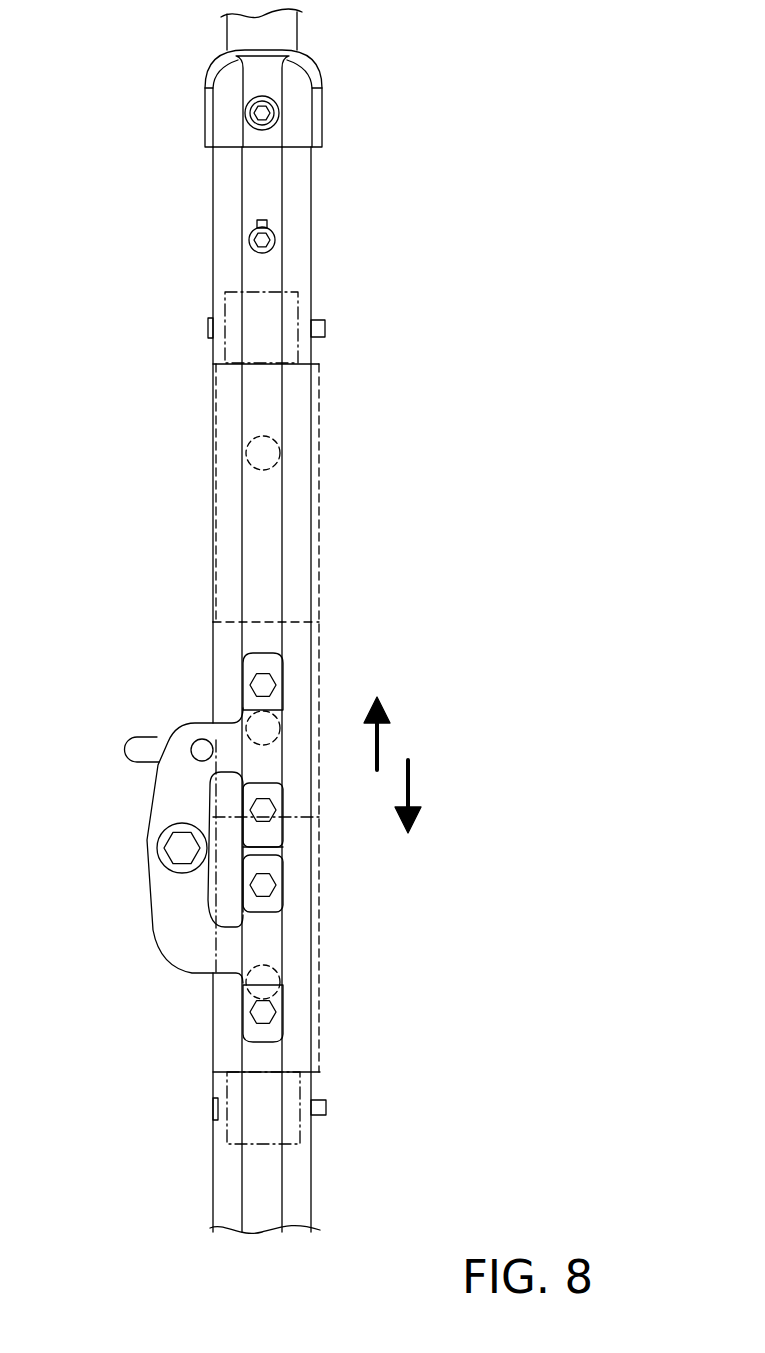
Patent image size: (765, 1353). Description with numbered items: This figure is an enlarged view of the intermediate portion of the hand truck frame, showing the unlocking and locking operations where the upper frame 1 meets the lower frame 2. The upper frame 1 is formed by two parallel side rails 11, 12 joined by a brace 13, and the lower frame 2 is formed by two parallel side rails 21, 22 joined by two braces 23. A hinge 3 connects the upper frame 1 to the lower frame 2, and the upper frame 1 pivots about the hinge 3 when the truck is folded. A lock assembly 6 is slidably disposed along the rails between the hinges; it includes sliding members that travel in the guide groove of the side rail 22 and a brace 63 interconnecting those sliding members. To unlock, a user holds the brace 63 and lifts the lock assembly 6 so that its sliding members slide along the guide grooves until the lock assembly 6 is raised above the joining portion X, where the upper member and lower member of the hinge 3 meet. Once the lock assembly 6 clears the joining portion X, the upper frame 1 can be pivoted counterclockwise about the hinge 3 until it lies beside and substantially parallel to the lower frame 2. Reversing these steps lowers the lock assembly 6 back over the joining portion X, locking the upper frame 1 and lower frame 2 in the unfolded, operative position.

The upper frame 1 is at (244, 315).
The side rail 11 is at (191, 384).
The side rail 12 is at (222, 228).
The brace 13 is at (235, 307).
The lock assembly 6 is at (325, 718).
The brace 63 is at (263, 453).
The hinge 3 is at (135, 905).
The joining portion X is at (293, 848).
The lower frame 2 is at (267, 927).
The side rail 21 is at (196, 927).
The side rail 22 is at (232, 1193).
The brace 23 is at (237, 1097).